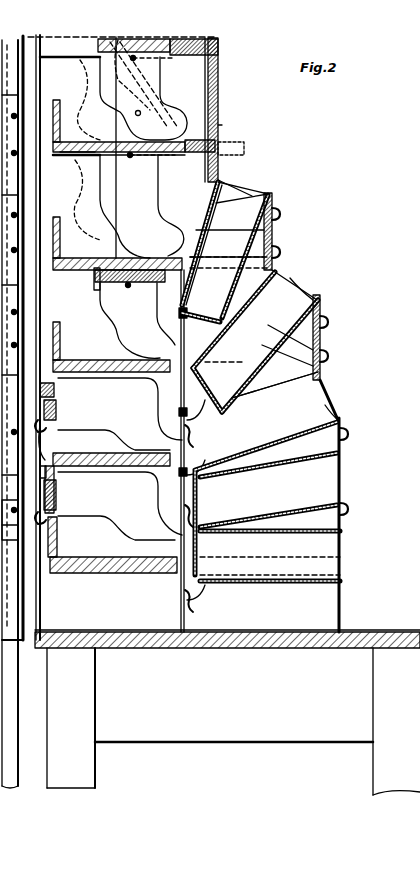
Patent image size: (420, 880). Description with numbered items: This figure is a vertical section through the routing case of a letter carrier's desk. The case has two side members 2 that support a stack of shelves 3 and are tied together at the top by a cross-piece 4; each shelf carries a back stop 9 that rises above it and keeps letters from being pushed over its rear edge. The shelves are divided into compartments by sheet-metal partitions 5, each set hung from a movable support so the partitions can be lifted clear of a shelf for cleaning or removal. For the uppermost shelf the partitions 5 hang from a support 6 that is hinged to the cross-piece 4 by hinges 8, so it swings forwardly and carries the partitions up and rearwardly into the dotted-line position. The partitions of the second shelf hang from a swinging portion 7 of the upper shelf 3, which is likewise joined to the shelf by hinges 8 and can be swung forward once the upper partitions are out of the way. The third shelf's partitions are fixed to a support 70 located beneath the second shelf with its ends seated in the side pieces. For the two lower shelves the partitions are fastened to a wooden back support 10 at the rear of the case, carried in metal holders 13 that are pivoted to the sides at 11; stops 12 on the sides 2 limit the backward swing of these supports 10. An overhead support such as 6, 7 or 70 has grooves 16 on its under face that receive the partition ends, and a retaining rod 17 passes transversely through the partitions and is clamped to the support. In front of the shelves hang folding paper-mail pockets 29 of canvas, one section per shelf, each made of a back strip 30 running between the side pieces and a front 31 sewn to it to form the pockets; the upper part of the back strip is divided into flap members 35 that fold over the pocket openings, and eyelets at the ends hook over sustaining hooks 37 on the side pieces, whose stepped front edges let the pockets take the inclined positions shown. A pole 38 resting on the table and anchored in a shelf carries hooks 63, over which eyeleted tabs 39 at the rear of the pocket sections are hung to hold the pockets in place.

The side members 2 is at (220, 168).
The shelves 3 is at (75, 142).
The cross-piece 4 is at (216, 44).
The partitions 5 is at (150, 86).
The support 6 is at (88, 56).
The swinging portion 7 is at (172, 110).
The hinges 8 is at (220, 130).
The back stop 9 is at (57, 100).
The support 10 is at (55, 390).
The pivots 11 is at (40, 352).
The stops 12 is at (55, 430).
The metal holders 13 is at (58, 405).
The grooves 16 is at (57, 160).
The retaining rod 17 is at (150, 80).
The pockets 29 is at (270, 290).
The back strip 30 is at (252, 196).
The front 31 is at (270, 230).
The flap members 35 is at (218, 125).
The sustaining hooks 37 is at (218, 115).
The pole 38 is at (200, 490).
The tabs 39 is at (182, 432).
The hooks 63 is at (200, 400).
The support 70 is at (170, 225).